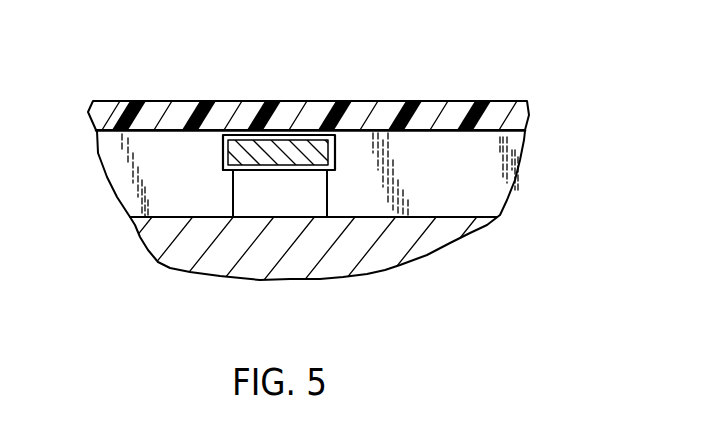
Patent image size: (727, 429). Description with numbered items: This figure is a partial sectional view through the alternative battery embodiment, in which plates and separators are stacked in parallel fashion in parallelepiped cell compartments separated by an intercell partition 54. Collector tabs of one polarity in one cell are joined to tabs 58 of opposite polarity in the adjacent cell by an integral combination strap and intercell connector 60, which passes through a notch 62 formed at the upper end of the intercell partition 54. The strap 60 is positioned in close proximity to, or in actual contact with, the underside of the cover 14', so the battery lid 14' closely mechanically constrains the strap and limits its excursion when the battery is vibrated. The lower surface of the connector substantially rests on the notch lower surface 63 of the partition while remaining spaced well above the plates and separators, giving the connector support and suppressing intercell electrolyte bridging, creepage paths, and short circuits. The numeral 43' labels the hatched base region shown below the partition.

The cover 14' is at (308, 87).
The base member 43' is at (286, 271).
The intercell partition 54 is at (482, 191).
The tabs 58 is at (313, 202).
The combination strap and intercell connector 60 is at (283, 145).
The notch 62 is at (339, 152).
The notch lower surface 63 is at (222, 173).